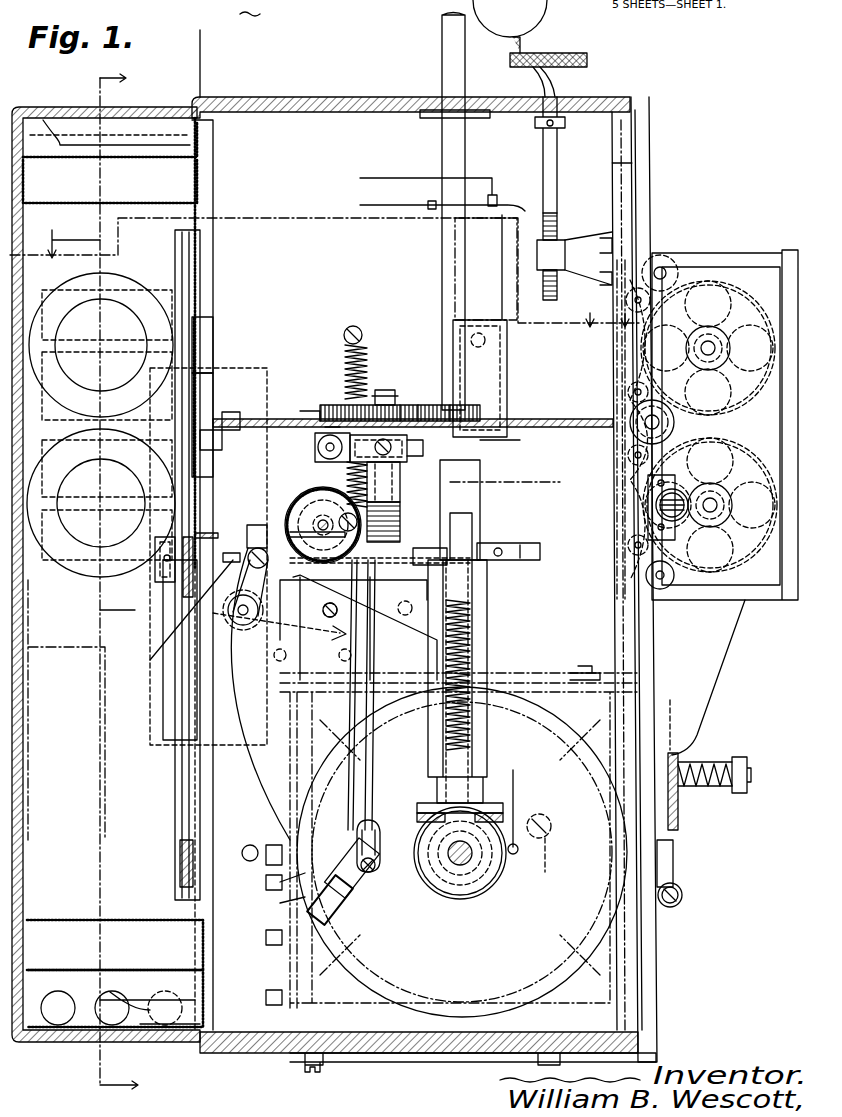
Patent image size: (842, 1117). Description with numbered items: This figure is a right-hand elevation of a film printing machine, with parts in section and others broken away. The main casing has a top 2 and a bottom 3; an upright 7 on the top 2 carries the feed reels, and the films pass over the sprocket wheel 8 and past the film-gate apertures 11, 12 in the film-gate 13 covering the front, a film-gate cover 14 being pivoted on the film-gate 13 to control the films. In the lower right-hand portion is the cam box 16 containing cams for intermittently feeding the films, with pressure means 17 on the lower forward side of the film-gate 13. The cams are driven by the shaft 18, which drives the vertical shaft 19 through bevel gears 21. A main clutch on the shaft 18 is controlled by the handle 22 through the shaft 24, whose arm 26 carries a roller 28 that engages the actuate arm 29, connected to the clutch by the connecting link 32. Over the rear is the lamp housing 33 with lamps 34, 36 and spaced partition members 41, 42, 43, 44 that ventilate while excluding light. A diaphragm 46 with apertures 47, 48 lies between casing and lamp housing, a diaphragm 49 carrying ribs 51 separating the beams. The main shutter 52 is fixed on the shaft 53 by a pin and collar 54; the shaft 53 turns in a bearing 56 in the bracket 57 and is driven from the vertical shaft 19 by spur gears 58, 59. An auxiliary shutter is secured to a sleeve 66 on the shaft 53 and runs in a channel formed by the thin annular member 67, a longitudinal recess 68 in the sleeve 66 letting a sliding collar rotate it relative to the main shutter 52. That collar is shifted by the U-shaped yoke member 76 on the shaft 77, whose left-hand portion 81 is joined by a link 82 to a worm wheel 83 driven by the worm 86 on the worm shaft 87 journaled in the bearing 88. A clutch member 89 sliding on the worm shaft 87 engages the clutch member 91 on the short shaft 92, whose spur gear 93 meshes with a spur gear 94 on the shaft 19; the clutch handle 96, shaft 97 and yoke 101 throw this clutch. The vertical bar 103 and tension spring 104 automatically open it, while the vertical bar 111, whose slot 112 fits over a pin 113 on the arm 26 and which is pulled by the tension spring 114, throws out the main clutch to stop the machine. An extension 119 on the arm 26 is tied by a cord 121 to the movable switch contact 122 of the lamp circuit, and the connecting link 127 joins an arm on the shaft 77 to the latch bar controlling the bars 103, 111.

The top 2 is at (222, 97).
The bottom 3 is at (243, 1055).
The upright 7 is at (271, 54).
The sprocket wheel 8 is at (547, 14).
The film-gate aperture 11 is at (626, 348).
The film-gate aperture 12 is at (648, 505).
The film-gate 13 is at (642, 181).
The film-gate cover 14 is at (710, 278).
The cam box 16 is at (563, 673).
The pressure means 17 is at (680, 815).
The shaft 18 is at (458, 862).
The vertical shaft 19 is at (445, 262).
The bevel gears 21 is at (302, 920).
The handle 22 is at (539, 852).
The shaft 24 is at (418, 805).
The arm 26 is at (362, 828).
The roller 28 is at (272, 913).
The actuate arm 29 is at (272, 885).
The connecting link 32 is at (249, 843).
The lamp housing 33 is at (28, 106).
The lamp 34 is at (115, 302).
The lamp 36 is at (120, 464).
The partition member 41 is at (87, 970).
The partition member 42 is at (87, 920).
The partition member 43 is at (70, 201).
The partition member 44 is at (140, 162).
The diaphragm 46 is at (214, 147).
The aperture 47 is at (215, 336).
The aperture 48 is at (216, 482).
The diaphragm 49 is at (318, 412).
The ribs 51 is at (512, 426).
The main shutter 52 is at (180, 842).
The shaft 53 is at (143, 568).
The pin and collar 54 is at (150, 640).
The bearing 56 is at (390, 600).
The bracket 57 is at (478, 645).
The spur gear 58 is at (505, 560).
The spur gear 59 is at (466, 520).
The sleeve 66 is at (158, 655).
The thin annular member 67 is at (200, 278).
The recess 68 is at (240, 555).
The U-shaped yoke member 76 is at (222, 660).
The shaft 77 is at (243, 626).
The left-hand portion 81 is at (256, 524).
The link 82 is at (302, 508).
The worm wheel 83 is at (345, 480).
The worm 86 is at (401, 512).
The worm shaft 87 is at (400, 466).
The bearing 88 is at (401, 488).
The clutch member 89 is at (420, 407).
The clutch member 91 is at (405, 405).
The short shaft 92 is at (382, 390).
The spur gear 93 is at (398, 390).
The spur gear 94 is at (450, 407).
The clutch handle 96 is at (480, 455).
The shaft 97 is at (330, 426).
The yoke 101 is at (318, 446).
The vertical bar 103 is at (505, 484).
The tension spring 104 is at (490, 615).
The vertical bar 111 is at (372, 658).
The slot 112 is at (368, 873).
The pin 113 is at (380, 910).
The tension spring 114 is at (345, 362).
The extension 119 is at (512, 847).
The cord 121 is at (513, 742).
The movable switch contact 122 is at (505, 204).
The connecting link 127 is at (284, 618).